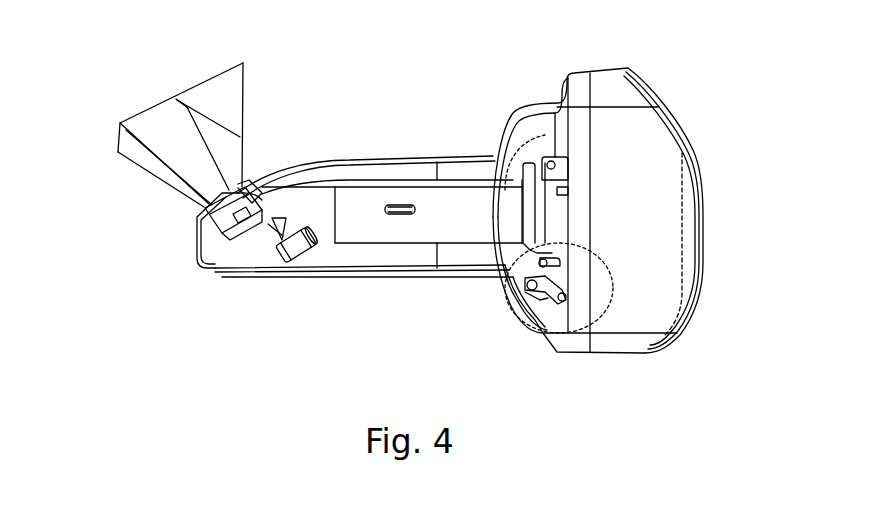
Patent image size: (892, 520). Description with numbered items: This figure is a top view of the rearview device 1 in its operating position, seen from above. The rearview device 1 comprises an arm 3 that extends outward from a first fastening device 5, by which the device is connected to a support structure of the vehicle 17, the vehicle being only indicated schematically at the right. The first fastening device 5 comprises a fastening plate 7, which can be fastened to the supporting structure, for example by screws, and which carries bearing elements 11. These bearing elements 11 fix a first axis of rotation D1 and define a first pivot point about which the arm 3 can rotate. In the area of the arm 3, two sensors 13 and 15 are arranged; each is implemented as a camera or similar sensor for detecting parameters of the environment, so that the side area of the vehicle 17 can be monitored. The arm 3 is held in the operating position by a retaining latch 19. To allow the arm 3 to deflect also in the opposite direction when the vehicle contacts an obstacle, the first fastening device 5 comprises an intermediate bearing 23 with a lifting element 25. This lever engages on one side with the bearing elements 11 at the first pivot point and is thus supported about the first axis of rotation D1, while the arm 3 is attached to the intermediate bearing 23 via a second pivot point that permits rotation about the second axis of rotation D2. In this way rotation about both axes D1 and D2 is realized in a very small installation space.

The rearview device 1 is at (442, 120).
The arm 3 is at (399, 155).
The first fastening device 5 is at (573, 365).
The fastening plate 7 is at (582, 70).
The bearing elements 11 is at (549, 162).
The sensor 13 is at (198, 233).
The sensor 15 is at (291, 257).
The vehicle 17 is at (665, 125).
The retaining latch 19 is at (526, 318).
The intermediate bearing 23 is at (563, 190).
The lifting element 25 is at (587, 200).
The first axis of rotation D1 is at (548, 163).
The second axis of rotation D2 is at (540, 305).